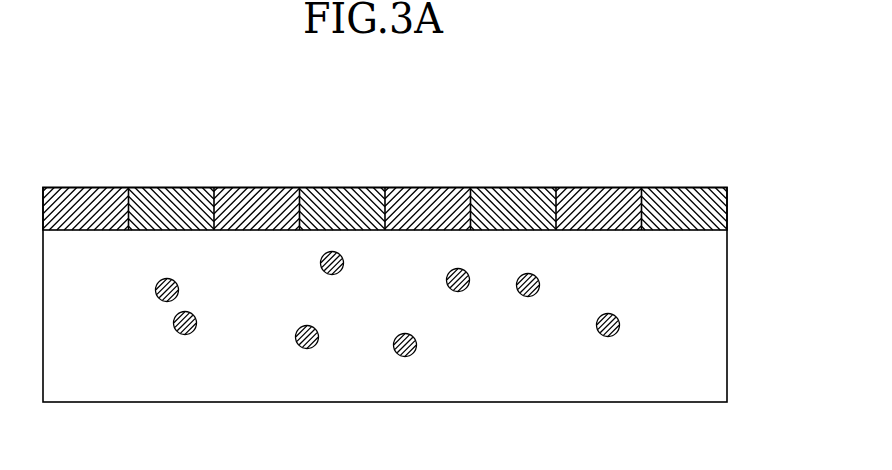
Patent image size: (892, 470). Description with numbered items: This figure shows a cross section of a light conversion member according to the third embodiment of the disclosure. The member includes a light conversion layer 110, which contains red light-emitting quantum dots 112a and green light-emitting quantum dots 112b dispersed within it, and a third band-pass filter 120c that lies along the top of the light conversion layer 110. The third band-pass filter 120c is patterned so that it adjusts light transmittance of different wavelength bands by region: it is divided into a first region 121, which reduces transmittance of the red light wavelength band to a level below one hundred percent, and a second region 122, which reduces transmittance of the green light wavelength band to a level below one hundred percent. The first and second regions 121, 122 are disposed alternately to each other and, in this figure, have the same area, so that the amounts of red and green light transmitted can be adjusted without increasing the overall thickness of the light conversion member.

The light conversion layer 110 is at (722, 272).
The third band-pass filter 120c is at (385, 170).
The first region 121 is at (604, 187).
The second region 122 is at (600, 143).
The red light-emitting quantum dots 112a is at (609, 337).
The green light-emitting quantum dots 112b is at (527, 297).